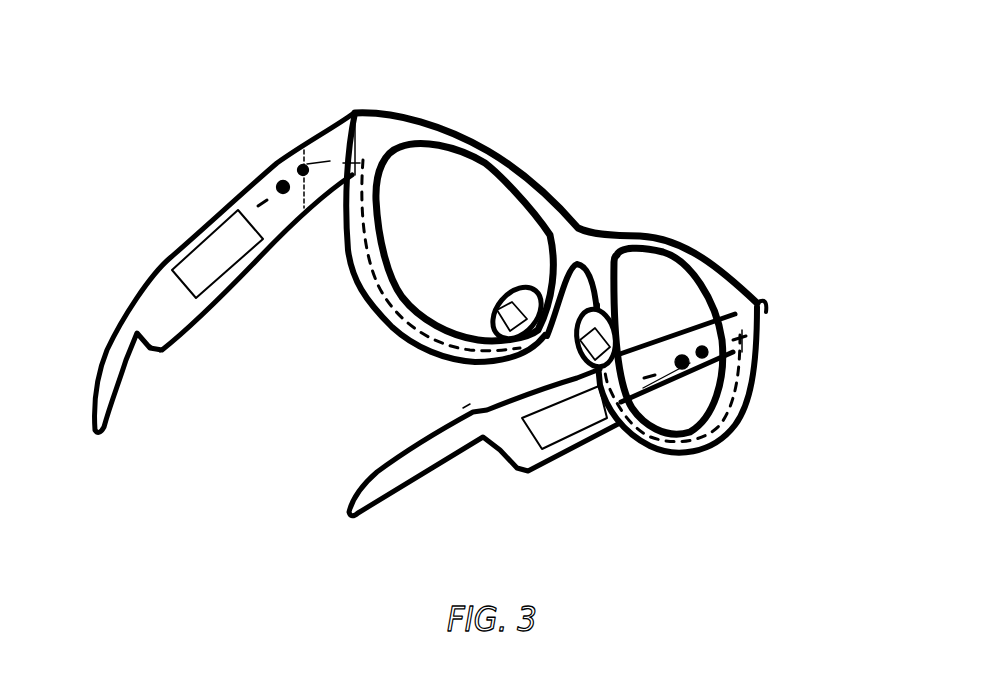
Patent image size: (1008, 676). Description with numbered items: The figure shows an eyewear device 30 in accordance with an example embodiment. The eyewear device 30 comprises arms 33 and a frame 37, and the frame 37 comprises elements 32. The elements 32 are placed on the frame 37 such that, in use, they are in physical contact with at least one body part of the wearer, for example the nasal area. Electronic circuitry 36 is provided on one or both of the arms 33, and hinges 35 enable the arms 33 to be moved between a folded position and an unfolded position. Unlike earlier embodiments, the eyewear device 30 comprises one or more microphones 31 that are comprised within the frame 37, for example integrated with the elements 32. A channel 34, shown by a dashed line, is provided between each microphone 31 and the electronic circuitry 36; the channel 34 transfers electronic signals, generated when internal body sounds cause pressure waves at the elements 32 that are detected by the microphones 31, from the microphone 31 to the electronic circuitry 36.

The eyewear device 30 is at (461, 326).
The microphones 31 is at (508, 298).
The elements 32 is at (525, 288).
The arms 33 is at (108, 348).
The channel 34 is at (372, 282).
The hinges 35 is at (761, 303).
The electronic circuitry 36 is at (238, 212).
The frame 37 is at (543, 188).